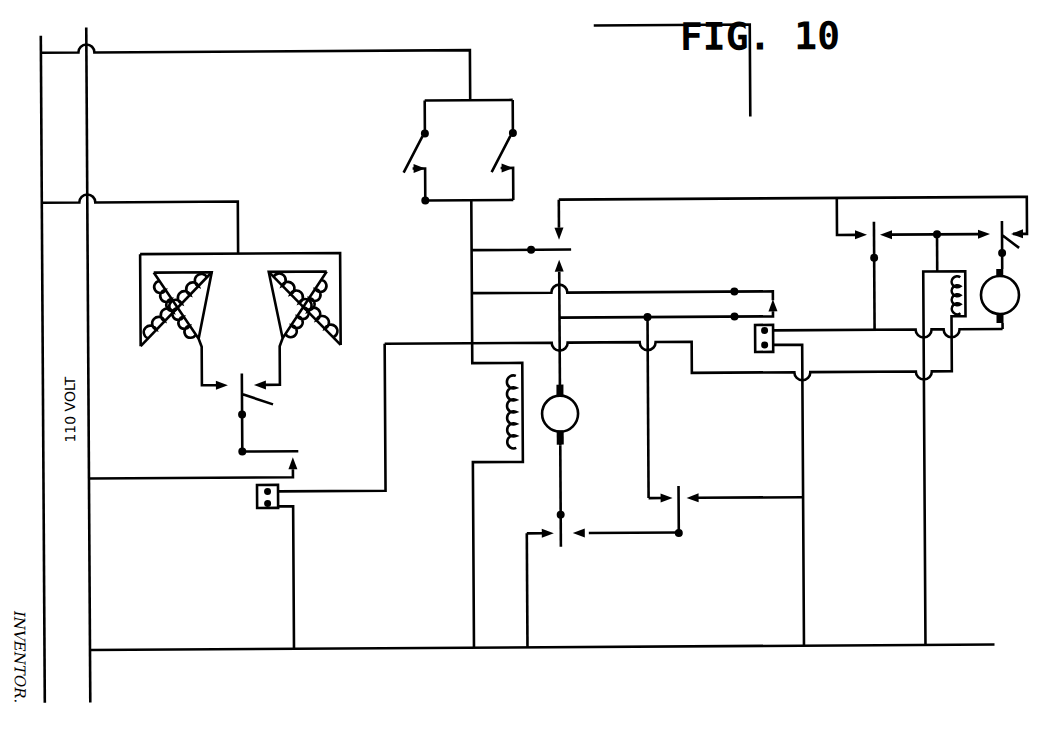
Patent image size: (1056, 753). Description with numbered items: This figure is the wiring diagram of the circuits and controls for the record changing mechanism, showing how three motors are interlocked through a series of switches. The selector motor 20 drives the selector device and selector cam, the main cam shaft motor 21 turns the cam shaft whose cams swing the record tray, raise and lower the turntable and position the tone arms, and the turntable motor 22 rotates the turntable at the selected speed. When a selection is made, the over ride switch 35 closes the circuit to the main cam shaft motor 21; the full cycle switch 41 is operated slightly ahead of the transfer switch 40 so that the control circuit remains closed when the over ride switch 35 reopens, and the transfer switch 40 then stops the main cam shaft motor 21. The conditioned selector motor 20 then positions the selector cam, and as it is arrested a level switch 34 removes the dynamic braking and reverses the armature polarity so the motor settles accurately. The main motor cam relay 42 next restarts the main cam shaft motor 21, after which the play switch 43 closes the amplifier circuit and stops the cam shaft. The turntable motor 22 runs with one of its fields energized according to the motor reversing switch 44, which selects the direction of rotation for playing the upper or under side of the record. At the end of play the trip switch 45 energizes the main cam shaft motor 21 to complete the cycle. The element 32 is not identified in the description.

The selector motor 20 is at (1016, 310).
The main cam shaft motor 21 is at (579, 414).
The turntable motor 22 is at (266, 290).
The thermostat switch 32 is at (254, 497).
The level switch 34 is at (1022, 244).
The over ride switch 35 is at (418, 157).
The transfer switch 40 is at (547, 249).
The full cycle switch 41 is at (518, 152).
The main motor cam relay 42 is at (755, 343).
The play switch 43 is at (560, 527).
The motor reversing switch 44 is at (273, 414).
The trip switch 45 is at (680, 513).